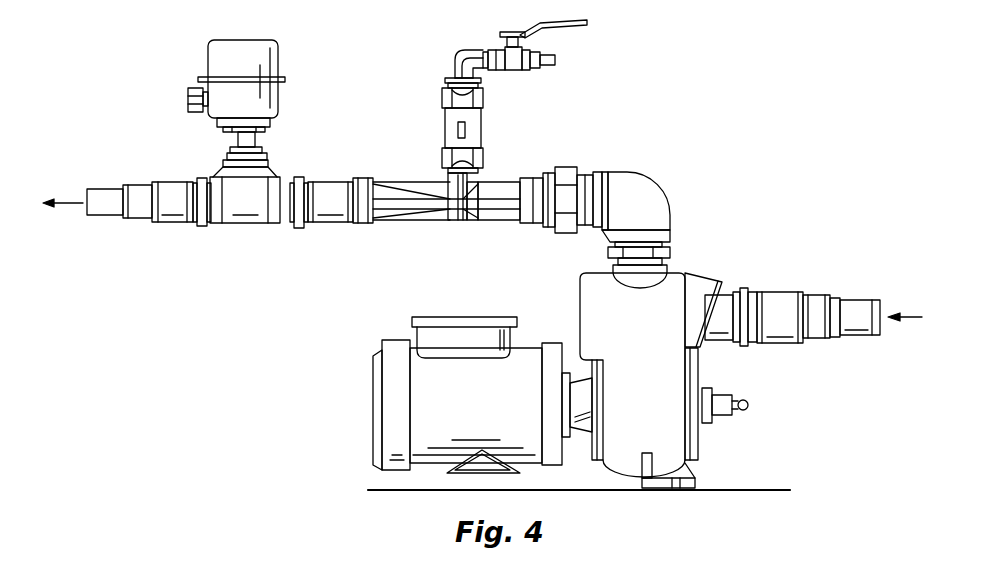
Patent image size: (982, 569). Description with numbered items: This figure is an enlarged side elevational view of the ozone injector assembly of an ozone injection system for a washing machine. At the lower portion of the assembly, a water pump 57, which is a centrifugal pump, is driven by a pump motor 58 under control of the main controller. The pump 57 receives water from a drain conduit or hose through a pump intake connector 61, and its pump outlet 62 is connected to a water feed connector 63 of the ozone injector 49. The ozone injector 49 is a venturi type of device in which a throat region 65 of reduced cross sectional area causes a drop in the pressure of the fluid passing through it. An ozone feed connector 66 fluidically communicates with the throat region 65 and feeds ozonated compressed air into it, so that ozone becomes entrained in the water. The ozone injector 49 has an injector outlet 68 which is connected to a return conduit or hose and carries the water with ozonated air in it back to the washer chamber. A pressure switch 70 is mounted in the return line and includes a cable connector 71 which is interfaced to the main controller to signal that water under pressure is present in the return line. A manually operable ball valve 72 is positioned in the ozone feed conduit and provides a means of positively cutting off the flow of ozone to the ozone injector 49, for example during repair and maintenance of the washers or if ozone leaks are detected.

The ozone injector 49 is at (444, 197).
The water pump 57 is at (672, 388).
The pump motor 58 is at (415, 407).
The pump intake connector 61 is at (860, 313).
The pump outlet 62 is at (672, 250).
The water feed connector 63 is at (550, 223).
The throat region 65 is at (460, 208).
The ozone feed connector 66 is at (483, 175).
The injector outlet 68 is at (367, 223).
The pressure switch 70 is at (268, 105).
The cable connector 71 is at (189, 100).
The ball valve 72 is at (508, 73).